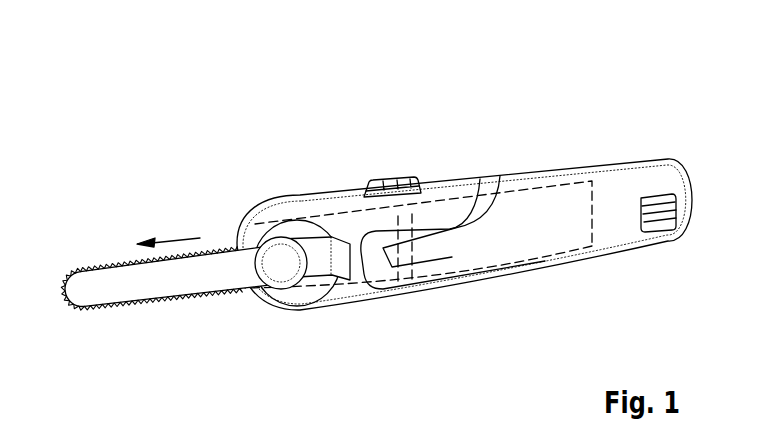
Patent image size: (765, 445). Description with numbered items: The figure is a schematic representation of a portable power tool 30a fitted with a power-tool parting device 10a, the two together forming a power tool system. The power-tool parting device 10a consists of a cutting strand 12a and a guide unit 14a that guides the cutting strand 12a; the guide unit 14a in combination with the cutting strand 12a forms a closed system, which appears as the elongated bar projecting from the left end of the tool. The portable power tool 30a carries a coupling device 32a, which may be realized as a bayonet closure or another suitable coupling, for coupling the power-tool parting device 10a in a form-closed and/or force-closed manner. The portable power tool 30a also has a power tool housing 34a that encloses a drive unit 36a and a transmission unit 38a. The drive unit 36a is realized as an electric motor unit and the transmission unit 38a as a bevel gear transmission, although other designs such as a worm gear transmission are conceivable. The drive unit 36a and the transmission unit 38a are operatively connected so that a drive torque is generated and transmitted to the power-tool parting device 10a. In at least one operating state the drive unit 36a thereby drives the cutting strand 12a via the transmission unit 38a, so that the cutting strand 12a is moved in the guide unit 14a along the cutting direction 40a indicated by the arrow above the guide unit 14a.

The power-tool parting device 10a is at (376, 229).
The cutting strand 12a is at (151, 306).
The guide unit 14a is at (203, 290).
The portable power tool 30a is at (590, 94).
The coupling device 32a is at (283, 326).
The power tool housing 34a is at (529, 180).
The drive unit 36a is at (503, 273).
The transmission unit 38a is at (364, 296).
The cutting direction 40a is at (121, 214).